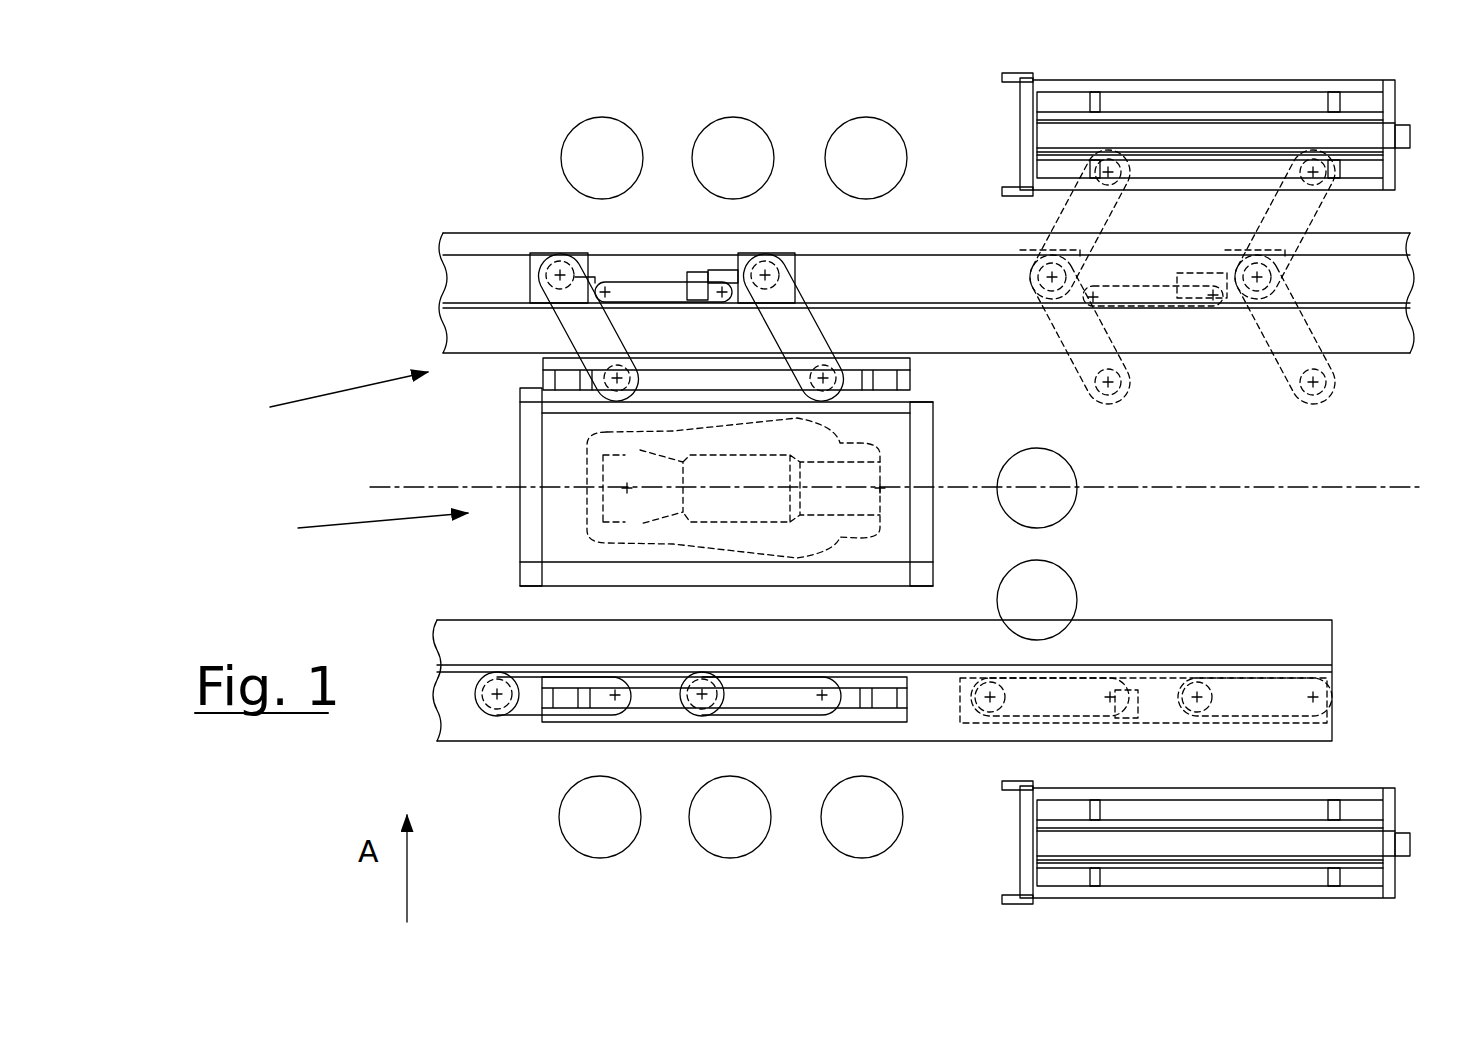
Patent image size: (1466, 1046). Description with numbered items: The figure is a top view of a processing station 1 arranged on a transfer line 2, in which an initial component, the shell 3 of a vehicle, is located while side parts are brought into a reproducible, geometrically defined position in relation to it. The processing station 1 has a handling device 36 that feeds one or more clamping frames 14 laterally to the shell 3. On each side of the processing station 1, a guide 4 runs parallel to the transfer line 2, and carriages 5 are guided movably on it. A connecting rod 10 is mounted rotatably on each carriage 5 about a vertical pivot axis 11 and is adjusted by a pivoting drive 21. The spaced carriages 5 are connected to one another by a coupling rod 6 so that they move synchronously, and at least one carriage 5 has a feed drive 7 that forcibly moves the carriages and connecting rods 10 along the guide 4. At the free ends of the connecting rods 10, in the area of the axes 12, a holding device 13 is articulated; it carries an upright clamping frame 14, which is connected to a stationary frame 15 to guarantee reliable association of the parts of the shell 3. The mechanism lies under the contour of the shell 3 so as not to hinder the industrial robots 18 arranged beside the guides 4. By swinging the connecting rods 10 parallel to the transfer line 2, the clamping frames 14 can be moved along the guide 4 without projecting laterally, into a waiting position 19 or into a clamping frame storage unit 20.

The processing station 1 is at (374, 530).
The transfer line 2 is at (1327, 488).
The shell 3 is at (645, 477).
The guide 4 is at (937, 327).
The carriage 5 is at (537, 252).
The coupling rod 6 is at (657, 293).
The feed drive 7 is at (697, 278).
The connecting rod 10 is at (582, 332).
The pivot axis 11 is at (562, 273).
The axis 12 is at (617, 377).
The holding device 13 is at (765, 363).
The clamping frame 14 is at (726, 515).
The frame 15 is at (530, 437).
The industrial robot 18 is at (587, 147).
The waiting position 19 is at (1108, 643).
The clamping frame storage unit 20 is at (1027, 110).
The pivoting drive 21 is at (553, 260).
The handling device 36 is at (328, 402).